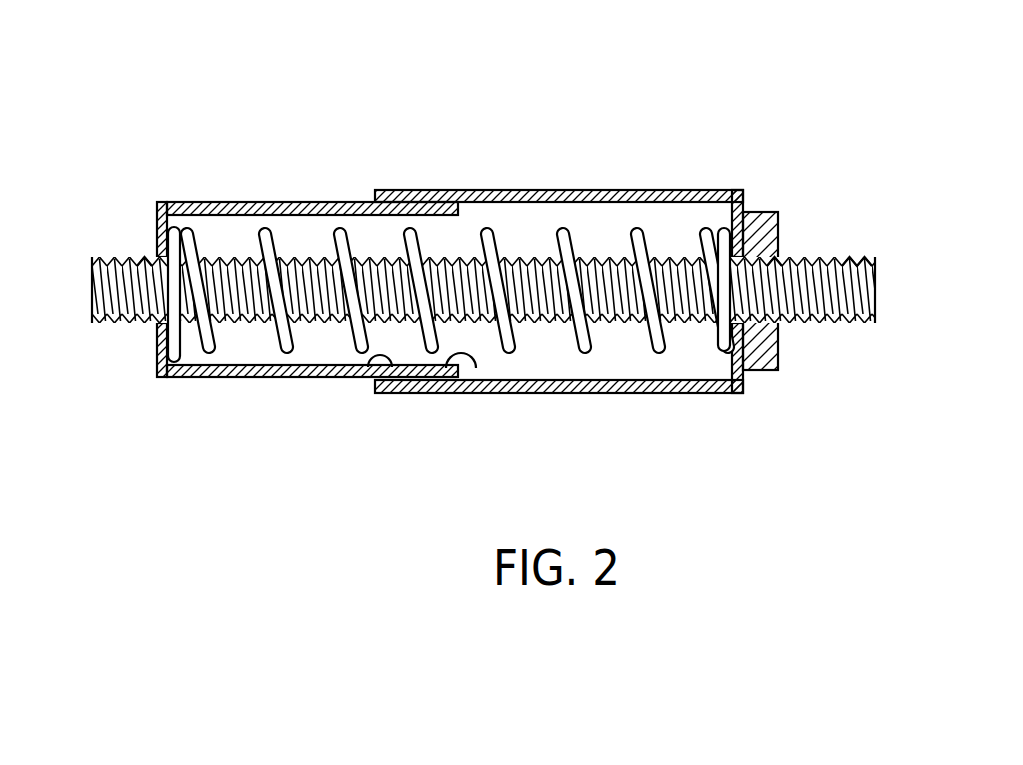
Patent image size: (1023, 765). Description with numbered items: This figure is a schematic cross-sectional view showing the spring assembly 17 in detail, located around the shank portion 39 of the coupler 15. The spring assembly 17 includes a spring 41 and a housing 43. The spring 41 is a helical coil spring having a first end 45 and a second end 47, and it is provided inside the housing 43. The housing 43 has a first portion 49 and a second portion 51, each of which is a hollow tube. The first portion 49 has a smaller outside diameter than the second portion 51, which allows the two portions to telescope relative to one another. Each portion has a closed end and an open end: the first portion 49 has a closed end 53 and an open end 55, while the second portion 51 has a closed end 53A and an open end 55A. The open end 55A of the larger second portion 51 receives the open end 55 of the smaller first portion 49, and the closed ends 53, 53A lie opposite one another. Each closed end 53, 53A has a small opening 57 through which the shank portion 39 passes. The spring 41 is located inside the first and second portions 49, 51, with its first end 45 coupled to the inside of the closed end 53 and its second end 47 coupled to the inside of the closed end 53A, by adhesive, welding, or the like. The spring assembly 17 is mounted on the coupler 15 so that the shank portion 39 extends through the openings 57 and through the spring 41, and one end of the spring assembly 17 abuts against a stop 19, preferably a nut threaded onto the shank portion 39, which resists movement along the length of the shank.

The coupler 15 is at (876, 281).
The spring assembly 17 is at (465, 265).
The stop 19 is at (766, 218).
The shank portion 39 is at (858, 265).
The spring 41 is at (266, 238).
The housing 43 is at (535, 130).
The first end 45 is at (176, 340).
The second end 47 is at (722, 393).
The first portion 49 is at (283, 372).
The second portion 51 is at (588, 393).
The closed end 53 is at (155, 365).
The closed end 53A is at (742, 378).
The open end 55 is at (474, 378).
The open end 55A is at (372, 366).
The small opening 57 is at (135, 258).